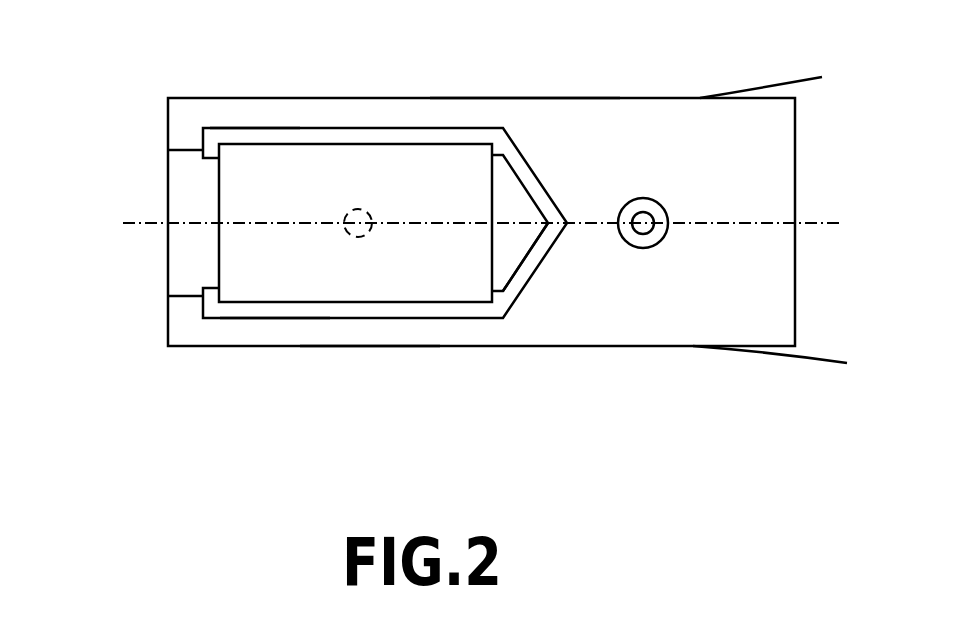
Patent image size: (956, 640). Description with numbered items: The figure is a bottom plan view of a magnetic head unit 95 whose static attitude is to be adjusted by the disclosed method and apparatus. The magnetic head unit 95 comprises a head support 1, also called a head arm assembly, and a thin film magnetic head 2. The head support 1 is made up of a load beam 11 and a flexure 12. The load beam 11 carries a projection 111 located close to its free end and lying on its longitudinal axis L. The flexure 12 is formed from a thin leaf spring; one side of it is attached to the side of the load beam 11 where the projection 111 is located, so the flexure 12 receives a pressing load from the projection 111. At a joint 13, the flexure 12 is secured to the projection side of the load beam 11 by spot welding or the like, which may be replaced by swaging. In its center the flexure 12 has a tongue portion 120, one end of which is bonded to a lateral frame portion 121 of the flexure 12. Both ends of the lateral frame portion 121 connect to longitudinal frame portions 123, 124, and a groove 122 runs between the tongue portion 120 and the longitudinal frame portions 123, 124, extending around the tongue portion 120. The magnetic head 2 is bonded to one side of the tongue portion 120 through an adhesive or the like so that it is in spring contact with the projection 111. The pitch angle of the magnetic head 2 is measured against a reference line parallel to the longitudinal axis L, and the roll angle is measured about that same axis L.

The head support 1 is at (799, 370).
The magnetic head 2 is at (449, 157).
The load beam 11 is at (792, 90).
The flexure 12 is at (185, 355).
The joint 13 is at (645, 217).
The magnetic head unit 95 is at (521, 80).
The projection 111 is at (359, 213).
The tongue portion 120 is at (517, 258).
The lateral frame portion 121 is at (190, 272).
The groove 122 is at (275, 310).
The longitudinal frame portion 123 is at (367, 347).
The longitudinal frame portion 124 is at (225, 118).
The longitudinal axis L is at (138, 222).